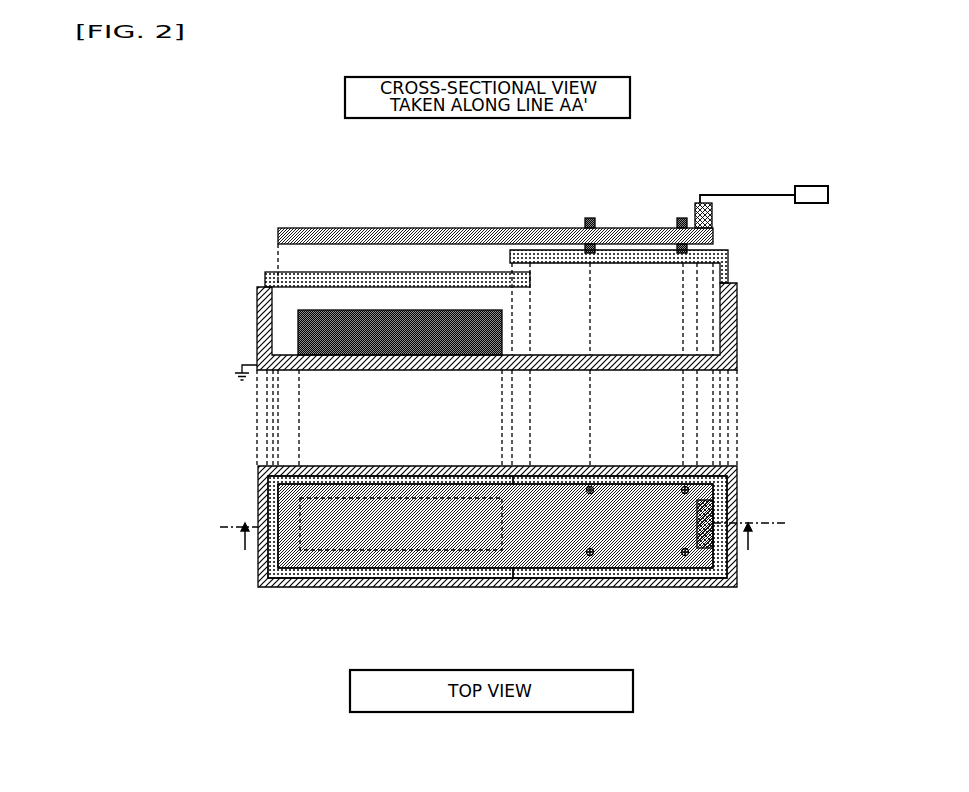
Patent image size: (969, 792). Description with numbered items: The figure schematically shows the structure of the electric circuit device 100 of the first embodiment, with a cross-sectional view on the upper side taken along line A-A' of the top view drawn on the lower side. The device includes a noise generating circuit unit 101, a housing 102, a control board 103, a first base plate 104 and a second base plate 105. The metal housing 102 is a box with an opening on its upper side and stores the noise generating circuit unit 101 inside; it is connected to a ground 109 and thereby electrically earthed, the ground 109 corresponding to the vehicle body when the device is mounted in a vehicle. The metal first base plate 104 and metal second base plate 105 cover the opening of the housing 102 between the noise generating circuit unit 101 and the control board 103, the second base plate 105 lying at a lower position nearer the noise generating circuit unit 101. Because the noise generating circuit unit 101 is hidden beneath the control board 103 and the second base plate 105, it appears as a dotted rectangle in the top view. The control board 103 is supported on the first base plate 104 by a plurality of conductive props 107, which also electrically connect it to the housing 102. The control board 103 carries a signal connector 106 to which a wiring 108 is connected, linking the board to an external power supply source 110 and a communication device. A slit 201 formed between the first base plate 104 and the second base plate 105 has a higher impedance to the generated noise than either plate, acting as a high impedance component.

The electric circuit device 100 is at (221, 138).
The noise generating circuit unit 101 is at (437, 357).
The housing 102 is at (258, 558).
The control board 103 is at (345, 227).
The first base plate 104 is at (603, 630).
The second base plate 105 is at (267, 272).
The signal connector 106 is at (697, 200).
The conductive prop 107 is at (589, 217).
The wiring 108 is at (745, 194).
The ground 109 is at (242, 362).
The power supply source 110 is at (815, 189).
The slit 201 is at (520, 264).